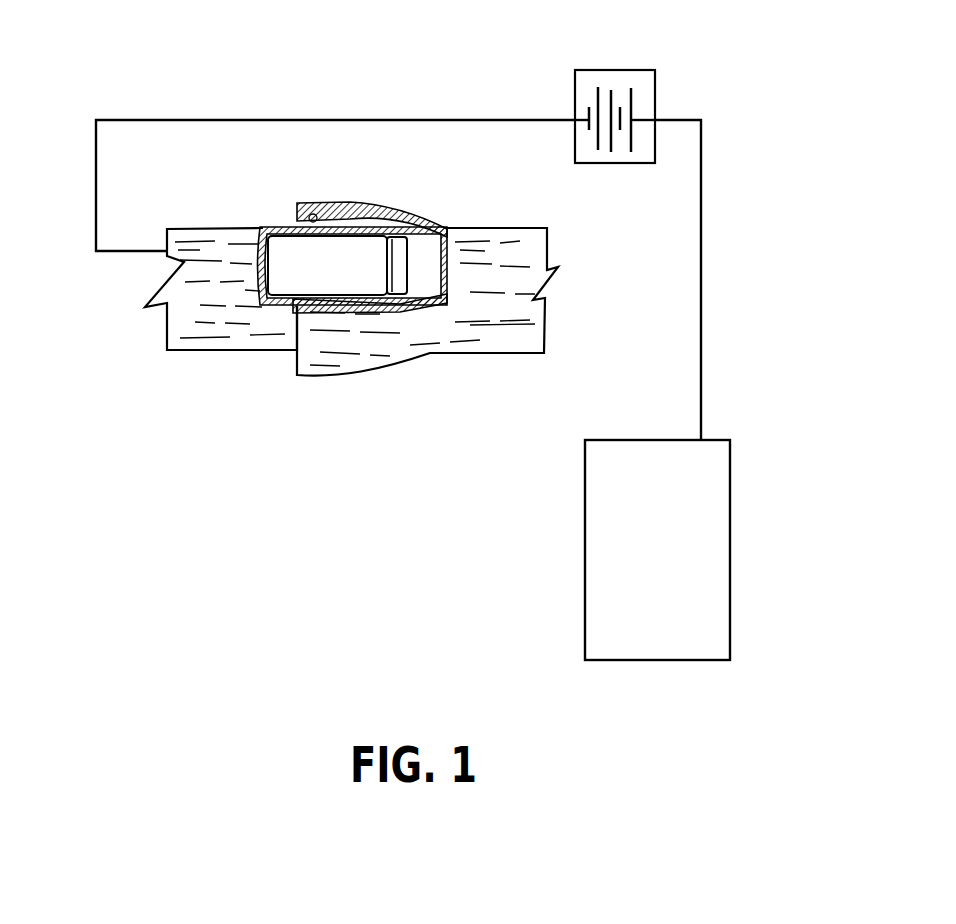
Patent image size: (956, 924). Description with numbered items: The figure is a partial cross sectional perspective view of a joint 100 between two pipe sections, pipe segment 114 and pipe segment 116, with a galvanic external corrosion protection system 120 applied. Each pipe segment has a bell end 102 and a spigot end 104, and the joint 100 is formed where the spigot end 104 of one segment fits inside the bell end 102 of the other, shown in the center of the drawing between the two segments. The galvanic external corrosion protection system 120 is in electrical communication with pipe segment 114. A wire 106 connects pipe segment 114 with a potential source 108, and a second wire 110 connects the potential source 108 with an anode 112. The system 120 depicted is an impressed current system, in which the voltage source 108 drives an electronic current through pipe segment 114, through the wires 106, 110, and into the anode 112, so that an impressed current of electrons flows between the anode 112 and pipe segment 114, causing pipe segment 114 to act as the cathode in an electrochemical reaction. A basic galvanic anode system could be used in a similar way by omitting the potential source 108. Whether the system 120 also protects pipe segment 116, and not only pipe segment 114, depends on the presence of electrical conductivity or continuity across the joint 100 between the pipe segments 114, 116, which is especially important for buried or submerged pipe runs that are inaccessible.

The joint 100 is at (140, 458).
The bell end 102 is at (357, 207).
The spigot end 104 is at (277, 353).
The wire 106 is at (303, 118).
The potential source 108 is at (618, 70).
The wire 110 is at (701, 257).
The anode 112 is at (729, 497).
The pipe segment 114 is at (180, 353).
The pipe segment 116 is at (500, 353).
The galvanic external corrosion protection system 120 is at (779, 133).